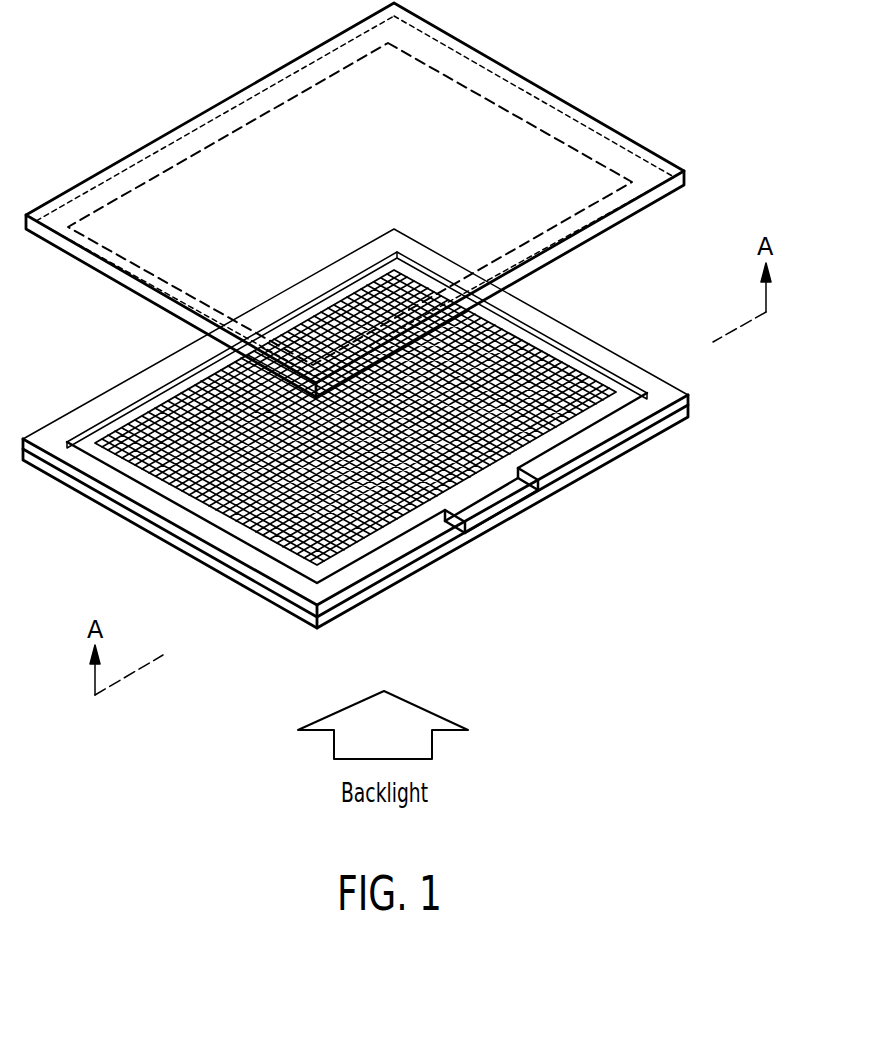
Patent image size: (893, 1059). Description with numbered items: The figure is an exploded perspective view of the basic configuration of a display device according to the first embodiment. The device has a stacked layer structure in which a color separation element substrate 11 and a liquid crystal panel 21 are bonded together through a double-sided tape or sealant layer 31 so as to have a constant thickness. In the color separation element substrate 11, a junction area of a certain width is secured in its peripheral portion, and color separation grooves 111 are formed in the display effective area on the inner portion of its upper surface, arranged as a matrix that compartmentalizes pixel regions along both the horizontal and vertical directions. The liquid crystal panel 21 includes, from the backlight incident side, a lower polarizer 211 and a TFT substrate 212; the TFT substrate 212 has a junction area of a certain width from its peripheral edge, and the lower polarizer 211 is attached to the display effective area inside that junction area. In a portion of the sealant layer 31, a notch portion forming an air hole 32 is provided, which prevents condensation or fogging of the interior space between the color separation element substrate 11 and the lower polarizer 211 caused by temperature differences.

The color separation element substrate 11 is at (622, 456).
The color separation grooves 111 is at (177, 420).
The liquid crystal panel 21 is at (647, 75).
The lower polarizer 211 is at (541, 84).
The TFT substrate 212 is at (570, 147).
The sealant layer 31 is at (172, 515).
The air hole 32 is at (487, 503).